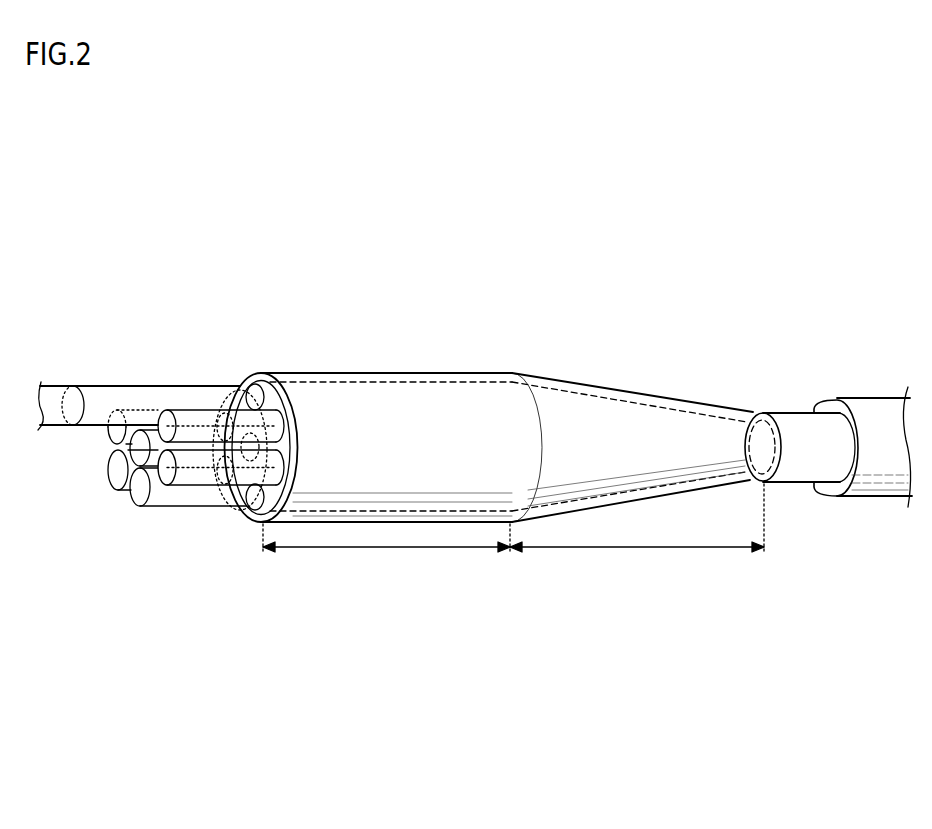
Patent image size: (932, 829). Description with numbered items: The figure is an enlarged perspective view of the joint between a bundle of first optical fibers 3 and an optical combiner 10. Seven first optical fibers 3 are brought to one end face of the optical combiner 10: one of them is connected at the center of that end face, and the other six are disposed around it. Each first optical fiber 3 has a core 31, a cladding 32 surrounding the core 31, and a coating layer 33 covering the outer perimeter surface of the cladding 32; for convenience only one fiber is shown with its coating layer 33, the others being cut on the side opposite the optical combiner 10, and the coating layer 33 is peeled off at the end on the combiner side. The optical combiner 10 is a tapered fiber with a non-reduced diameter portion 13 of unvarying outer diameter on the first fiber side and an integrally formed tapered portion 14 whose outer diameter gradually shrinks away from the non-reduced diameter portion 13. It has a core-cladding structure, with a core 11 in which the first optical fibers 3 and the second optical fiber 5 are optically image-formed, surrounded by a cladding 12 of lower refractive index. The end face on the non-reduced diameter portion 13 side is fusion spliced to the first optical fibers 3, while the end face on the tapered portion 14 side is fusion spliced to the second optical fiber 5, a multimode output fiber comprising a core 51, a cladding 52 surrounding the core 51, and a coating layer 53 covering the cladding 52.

The first optical fiber 3 is at (165, 397).
The second optical fiber 5 is at (843, 398).
The optical combiner 10 is at (490, 378).
The core 11 is at (268, 393).
The cladding 12 is at (257, 377).
The non-reduced diameter portion 13 is at (386, 550).
The tapered portion 14 is at (637, 530).
The core 31 is at (235, 378).
The cladding 32 is at (125, 388).
The coating layer 33 is at (55, 383).
The core 51 is at (748, 417).
The cladding 52 is at (793, 417).
The coating layer 53 is at (837, 403).